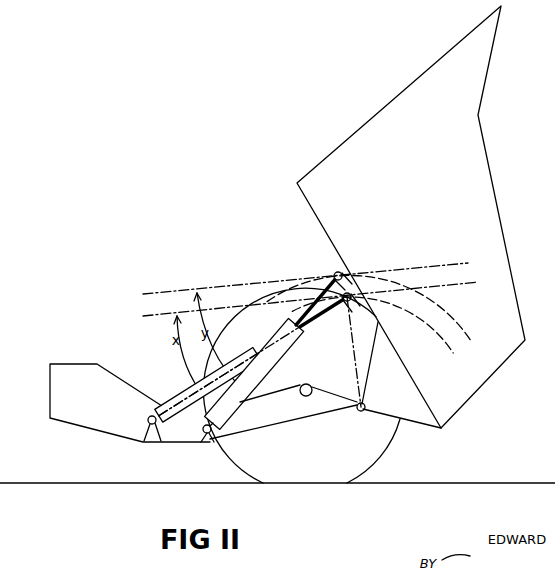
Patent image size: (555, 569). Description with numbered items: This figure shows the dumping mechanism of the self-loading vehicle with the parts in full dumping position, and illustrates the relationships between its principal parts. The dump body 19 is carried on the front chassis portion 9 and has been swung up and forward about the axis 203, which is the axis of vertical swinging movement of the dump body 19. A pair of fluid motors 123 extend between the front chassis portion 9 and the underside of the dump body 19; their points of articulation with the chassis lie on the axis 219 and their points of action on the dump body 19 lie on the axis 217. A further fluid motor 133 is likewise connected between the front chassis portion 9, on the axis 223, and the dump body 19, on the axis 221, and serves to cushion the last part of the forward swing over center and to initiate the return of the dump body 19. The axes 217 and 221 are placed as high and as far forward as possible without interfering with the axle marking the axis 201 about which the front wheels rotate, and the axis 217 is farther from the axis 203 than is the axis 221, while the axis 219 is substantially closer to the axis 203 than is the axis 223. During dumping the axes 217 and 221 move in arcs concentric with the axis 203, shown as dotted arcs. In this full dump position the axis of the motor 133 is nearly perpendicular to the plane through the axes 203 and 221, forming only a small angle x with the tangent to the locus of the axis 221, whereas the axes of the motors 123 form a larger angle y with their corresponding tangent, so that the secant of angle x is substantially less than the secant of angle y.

The front chassis portion 9 is at (60, 393).
The dump body 19 is at (482, 214).
The fluid motors 123 is at (245, 403).
The further fluid motor 133 is at (190, 402).
The axis 201 is at (308, 384).
The axis 203 is at (365, 407).
The axis 217 is at (336, 273).
The axis 219 is at (207, 434).
The axis 221 is at (343, 302).
The axis 223 is at (149, 425).